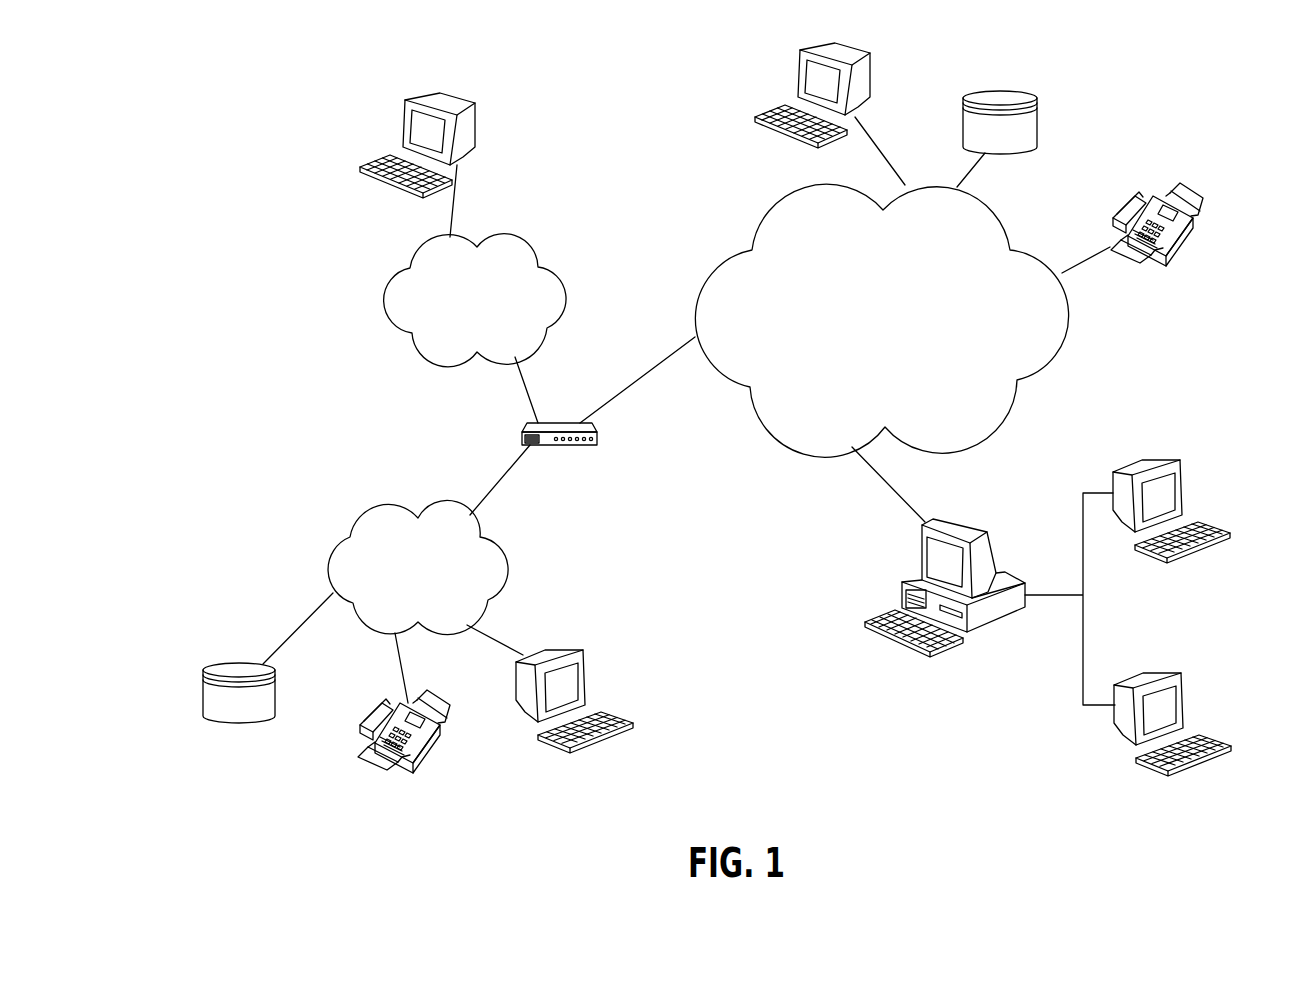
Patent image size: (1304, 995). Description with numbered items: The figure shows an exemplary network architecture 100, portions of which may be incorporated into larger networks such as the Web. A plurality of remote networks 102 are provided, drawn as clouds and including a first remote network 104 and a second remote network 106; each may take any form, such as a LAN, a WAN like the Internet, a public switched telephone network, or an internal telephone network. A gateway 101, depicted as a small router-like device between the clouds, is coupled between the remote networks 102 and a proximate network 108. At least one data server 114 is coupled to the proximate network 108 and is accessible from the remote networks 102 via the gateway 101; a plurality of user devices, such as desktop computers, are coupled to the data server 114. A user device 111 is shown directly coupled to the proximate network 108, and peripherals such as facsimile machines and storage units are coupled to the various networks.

The network architecture 100 is at (216, 101).
The gateway 101 is at (580, 446).
The remote networks 102 is at (382, 357).
The first remote network 104 is at (328, 562).
The second remote network 106 is at (567, 292).
The proximate network 108 is at (1072, 334).
The user device 111 is at (870, 72).
The data server 114 is at (920, 557).